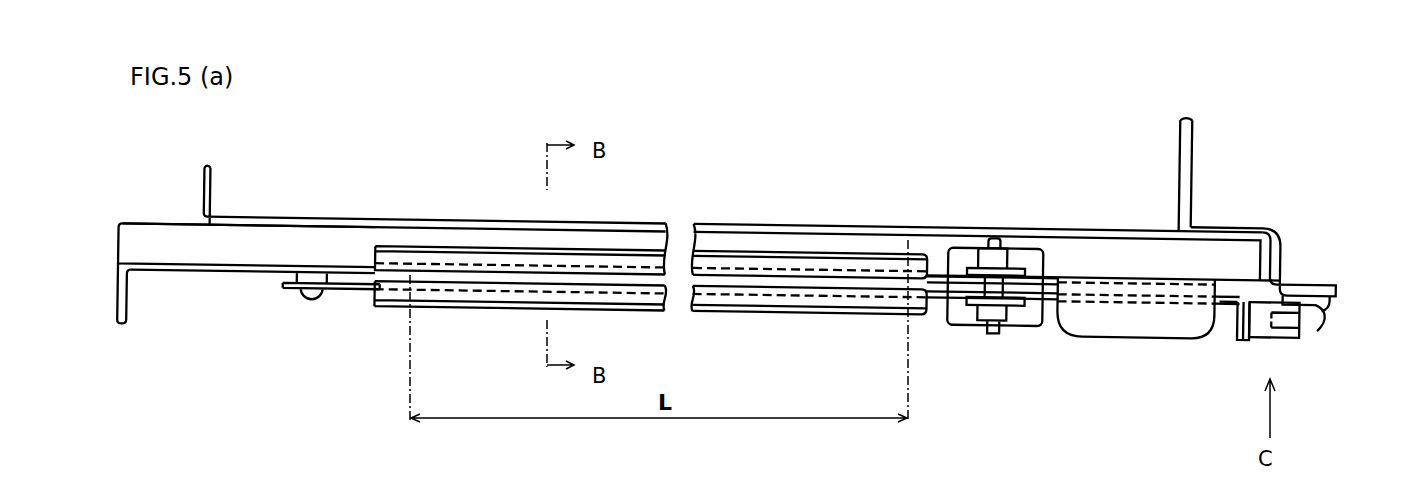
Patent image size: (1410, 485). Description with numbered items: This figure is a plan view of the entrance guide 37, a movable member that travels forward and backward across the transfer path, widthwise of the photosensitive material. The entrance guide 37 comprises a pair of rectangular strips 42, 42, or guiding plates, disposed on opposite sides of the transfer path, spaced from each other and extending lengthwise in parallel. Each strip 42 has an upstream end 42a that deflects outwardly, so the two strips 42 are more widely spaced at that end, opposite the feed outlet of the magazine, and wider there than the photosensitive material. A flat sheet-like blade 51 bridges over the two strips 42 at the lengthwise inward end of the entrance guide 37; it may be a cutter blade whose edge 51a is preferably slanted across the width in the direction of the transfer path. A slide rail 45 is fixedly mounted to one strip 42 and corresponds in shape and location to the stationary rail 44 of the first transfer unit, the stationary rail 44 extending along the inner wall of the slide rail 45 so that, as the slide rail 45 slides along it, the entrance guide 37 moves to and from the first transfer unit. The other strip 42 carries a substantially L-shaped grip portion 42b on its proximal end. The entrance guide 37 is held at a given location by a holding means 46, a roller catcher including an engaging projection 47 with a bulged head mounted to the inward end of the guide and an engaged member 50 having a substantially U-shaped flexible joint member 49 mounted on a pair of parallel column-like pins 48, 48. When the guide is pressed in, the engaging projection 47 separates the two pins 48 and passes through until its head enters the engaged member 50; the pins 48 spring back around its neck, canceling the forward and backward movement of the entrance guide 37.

The entrance guide 37 is at (630, 246).
The strip 42 is at (337, 268).
The upstream end 42a is at (790, 305).
The grip portion 42b is at (120, 324).
The stationary rail 44 is at (265, 218).
The slide rail 45 is at (270, 248).
The holding means 46 is at (1221, 359).
The engaging projection 47 is at (1300, 342).
The column-like pin 48 is at (1250, 342).
The flexible joint member 49 is at (1328, 322).
The engaged member 50 is at (1334, 303).
The blade 51 is at (1005, 260).
The edge 51a is at (971, 325).